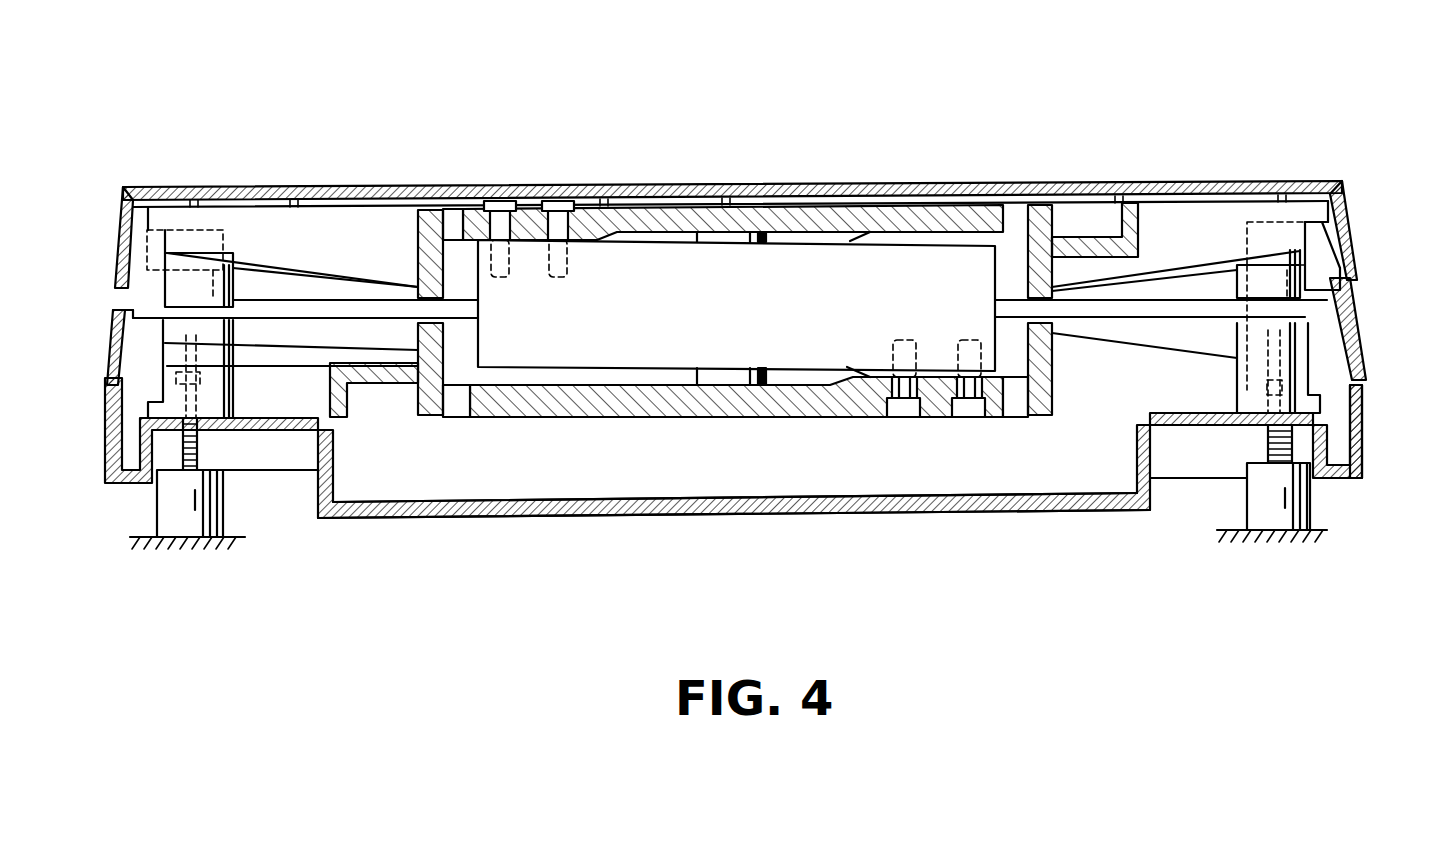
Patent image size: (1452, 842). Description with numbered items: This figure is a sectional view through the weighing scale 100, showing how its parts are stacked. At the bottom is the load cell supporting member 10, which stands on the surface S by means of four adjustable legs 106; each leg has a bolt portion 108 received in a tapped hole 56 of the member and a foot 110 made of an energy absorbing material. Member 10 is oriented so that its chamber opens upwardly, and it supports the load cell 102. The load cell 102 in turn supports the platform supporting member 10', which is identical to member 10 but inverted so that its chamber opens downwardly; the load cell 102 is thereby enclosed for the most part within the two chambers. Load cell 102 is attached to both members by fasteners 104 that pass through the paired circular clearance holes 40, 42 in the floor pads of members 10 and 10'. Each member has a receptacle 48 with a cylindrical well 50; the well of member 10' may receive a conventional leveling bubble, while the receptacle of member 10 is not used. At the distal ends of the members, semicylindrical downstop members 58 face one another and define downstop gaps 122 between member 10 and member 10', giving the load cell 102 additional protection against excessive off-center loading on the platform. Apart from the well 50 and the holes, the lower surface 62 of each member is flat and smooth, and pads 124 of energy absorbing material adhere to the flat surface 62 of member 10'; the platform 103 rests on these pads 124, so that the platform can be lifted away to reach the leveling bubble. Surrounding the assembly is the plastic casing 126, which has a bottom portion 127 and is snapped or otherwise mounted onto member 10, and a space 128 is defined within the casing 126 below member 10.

The load cell supporting member 10 is at (734, 496).
The platform supporting member 10' is at (1276, 182).
The circular clearance hole 40 is at (465, 187).
The circular clearance hole 42 is at (612, 187).
The receptacle 48 is at (1153, 183).
The cylindrical well 50 is at (1075, 183).
The tapped hole 56 is at (222, 380).
The semicylindrical downstop member 58 is at (130, 270).
The lower surface 62 is at (372, 187).
The weighing scale 100 is at (902, 128).
The load cell 102 is at (697, 298).
The platform 103 is at (955, 183).
The fastener 104 is at (562, 187).
The adjustable leg 106 is at (136, 517).
The bolt portion 108 is at (203, 452).
The foot 110 is at (223, 510).
The downstop gap 122 is at (233, 315).
The pad 124 is at (188, 187).
The plastic casing 126 is at (1363, 335).
The bottom portion 127 is at (893, 513).
The space 128 is at (710, 478).
The surface S is at (235, 535).